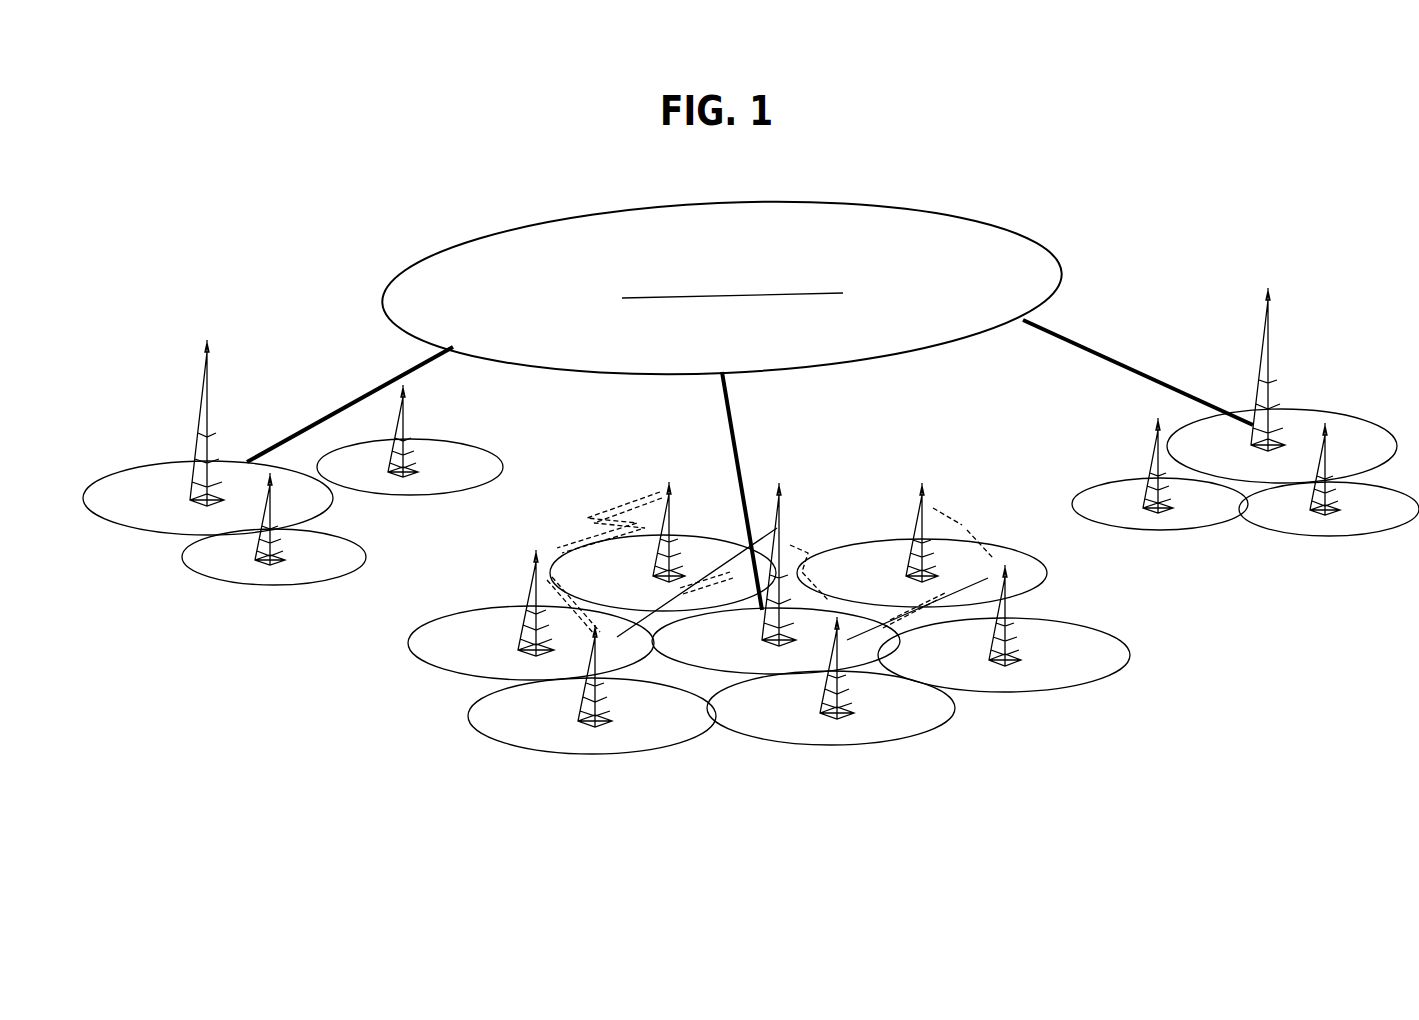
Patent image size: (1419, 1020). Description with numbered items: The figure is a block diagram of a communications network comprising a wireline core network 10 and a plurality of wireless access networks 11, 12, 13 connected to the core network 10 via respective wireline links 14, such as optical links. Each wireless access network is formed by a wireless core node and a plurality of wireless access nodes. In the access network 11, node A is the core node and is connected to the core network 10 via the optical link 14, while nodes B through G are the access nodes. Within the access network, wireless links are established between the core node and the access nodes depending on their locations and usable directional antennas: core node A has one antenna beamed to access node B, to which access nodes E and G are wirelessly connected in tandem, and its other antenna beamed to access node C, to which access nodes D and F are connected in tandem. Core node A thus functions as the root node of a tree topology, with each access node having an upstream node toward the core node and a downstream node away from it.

The wireline core network 10 is at (729, 204).
The wireless access network 11 is at (873, 796).
The wireless access network 12 is at (252, 628).
The wireless access network 13 is at (1260, 573).
The wireline link 14 is at (338, 408).